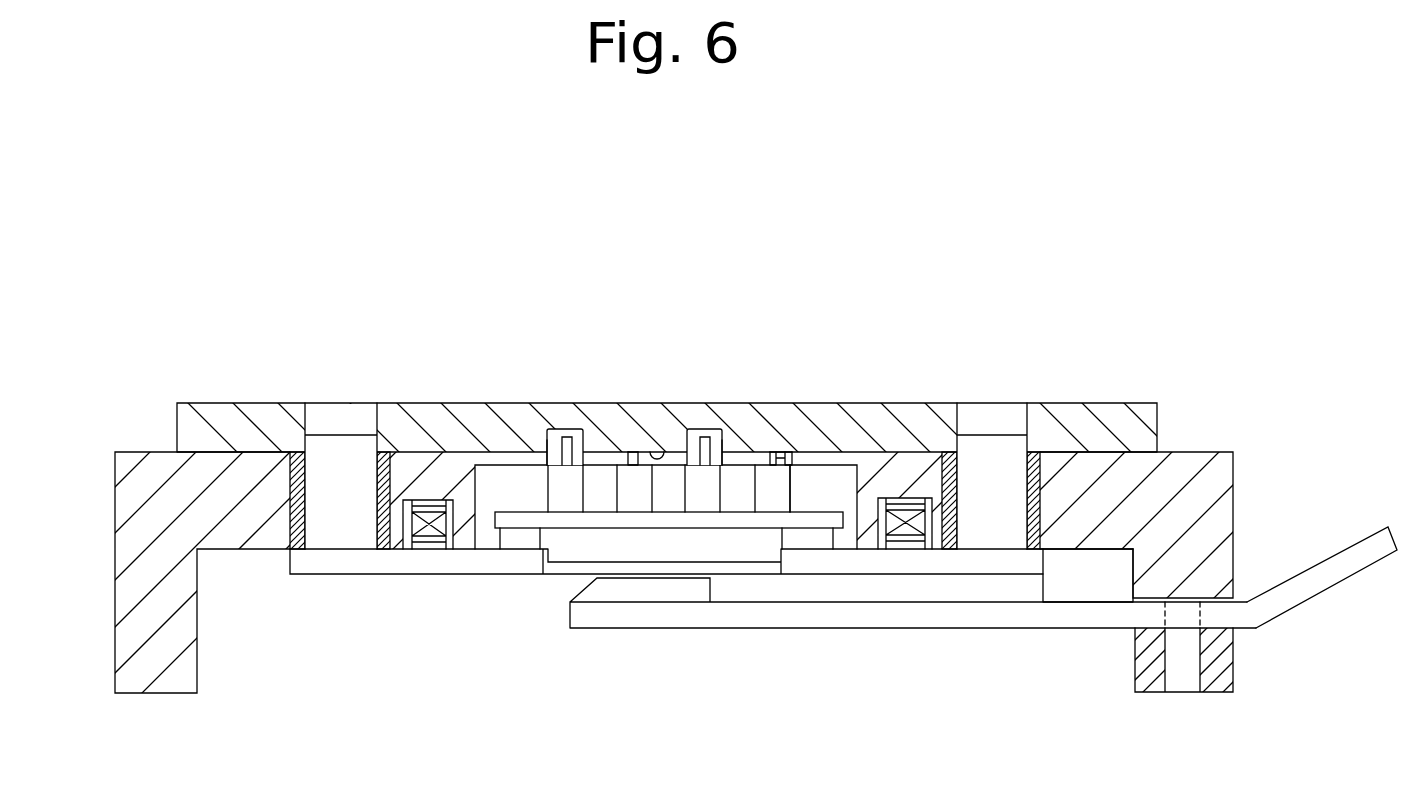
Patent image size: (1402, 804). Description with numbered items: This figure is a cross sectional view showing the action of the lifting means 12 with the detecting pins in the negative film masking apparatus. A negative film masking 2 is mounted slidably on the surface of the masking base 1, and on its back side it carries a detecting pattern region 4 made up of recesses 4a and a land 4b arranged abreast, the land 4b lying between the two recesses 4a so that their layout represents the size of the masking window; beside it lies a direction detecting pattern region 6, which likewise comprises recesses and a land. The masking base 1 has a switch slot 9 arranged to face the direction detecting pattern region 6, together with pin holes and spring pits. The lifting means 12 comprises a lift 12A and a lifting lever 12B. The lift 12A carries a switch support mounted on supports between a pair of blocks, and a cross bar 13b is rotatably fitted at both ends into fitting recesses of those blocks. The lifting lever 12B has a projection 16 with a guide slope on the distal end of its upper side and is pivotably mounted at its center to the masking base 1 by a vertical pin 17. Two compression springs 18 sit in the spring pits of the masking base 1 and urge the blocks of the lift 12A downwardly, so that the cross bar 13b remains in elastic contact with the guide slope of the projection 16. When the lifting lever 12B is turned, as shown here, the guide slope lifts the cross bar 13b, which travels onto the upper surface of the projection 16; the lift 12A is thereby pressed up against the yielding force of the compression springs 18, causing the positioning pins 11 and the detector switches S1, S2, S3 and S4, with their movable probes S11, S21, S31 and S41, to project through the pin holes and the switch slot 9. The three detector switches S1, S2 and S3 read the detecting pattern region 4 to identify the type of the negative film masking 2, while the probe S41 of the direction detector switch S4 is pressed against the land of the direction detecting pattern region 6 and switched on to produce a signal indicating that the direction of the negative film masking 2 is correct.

The masking base 1 is at (152, 448).
The negative film masking 2 is at (237, 397).
The positioning pins 11 is at (338, 433).
The detecting pattern region 4 is at (618, 327).
The recesses 4a is at (578, 429).
The land 4b is at (660, 447).
The direction detecting pattern region 6 is at (785, 455).
The switch slot 9 is at (800, 447).
The movable probe S11 is at (543, 437).
The movable probe S21 is at (628, 450).
The movable probe S31 is at (723, 447).
The movable probe S41 is at (778, 450).
The detector switch S1 is at (567, 500).
The detector switch S2 is at (632, 500).
The detector switch S3 is at (697, 500).
The direction detector switch S4 is at (782, 500).
The lifting means 12 is at (558, 658).
The lift 12A is at (822, 560).
The lifting lever 12B is at (1315, 560).
The cross bar 13b is at (578, 560).
The projection 16 is at (648, 590).
The vertical pin 17 is at (1178, 672).
The compression springs 18 is at (427, 540).